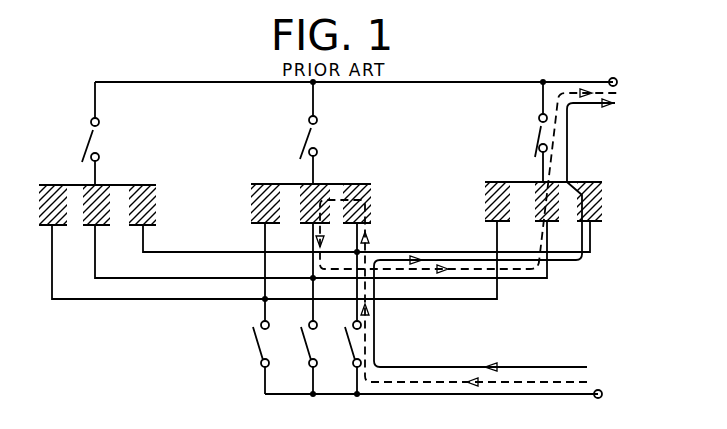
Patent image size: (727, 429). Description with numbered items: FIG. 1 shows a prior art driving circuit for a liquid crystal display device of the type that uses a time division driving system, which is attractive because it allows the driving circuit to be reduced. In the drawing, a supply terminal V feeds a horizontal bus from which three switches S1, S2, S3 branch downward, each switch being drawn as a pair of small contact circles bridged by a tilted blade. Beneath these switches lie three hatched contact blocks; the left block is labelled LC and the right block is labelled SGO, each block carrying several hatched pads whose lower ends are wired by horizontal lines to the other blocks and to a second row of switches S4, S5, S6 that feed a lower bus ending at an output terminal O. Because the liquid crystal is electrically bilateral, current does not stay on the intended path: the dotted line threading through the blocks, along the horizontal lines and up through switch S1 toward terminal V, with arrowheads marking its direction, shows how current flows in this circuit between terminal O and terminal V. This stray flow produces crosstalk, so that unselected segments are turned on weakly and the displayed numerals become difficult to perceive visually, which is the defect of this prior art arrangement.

The switch S1 is at (536, 138).
The switch S2 is at (306, 140).
The switch S3 is at (86, 140).
The switch S4 is at (349, 343).
The switch S5 is at (302, 343).
The switch S6 is at (253, 343).
The line contact block LC is at (50, 224).
The signal contact block SGO is at (600, 218).
The input terminal V is at (638, 82).
The output terminal O is at (625, 394).